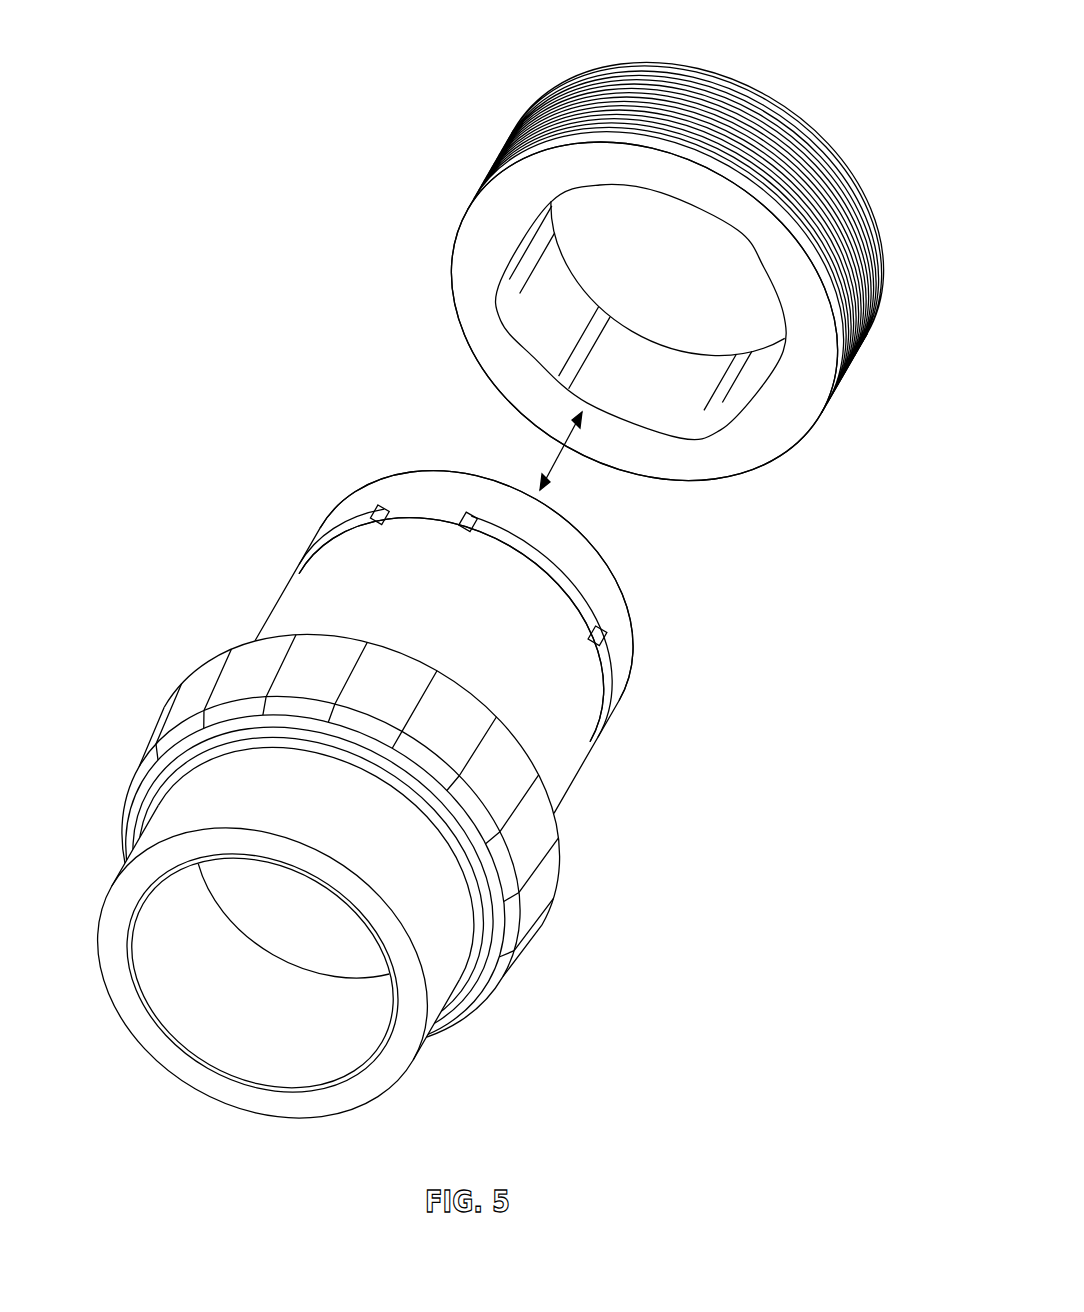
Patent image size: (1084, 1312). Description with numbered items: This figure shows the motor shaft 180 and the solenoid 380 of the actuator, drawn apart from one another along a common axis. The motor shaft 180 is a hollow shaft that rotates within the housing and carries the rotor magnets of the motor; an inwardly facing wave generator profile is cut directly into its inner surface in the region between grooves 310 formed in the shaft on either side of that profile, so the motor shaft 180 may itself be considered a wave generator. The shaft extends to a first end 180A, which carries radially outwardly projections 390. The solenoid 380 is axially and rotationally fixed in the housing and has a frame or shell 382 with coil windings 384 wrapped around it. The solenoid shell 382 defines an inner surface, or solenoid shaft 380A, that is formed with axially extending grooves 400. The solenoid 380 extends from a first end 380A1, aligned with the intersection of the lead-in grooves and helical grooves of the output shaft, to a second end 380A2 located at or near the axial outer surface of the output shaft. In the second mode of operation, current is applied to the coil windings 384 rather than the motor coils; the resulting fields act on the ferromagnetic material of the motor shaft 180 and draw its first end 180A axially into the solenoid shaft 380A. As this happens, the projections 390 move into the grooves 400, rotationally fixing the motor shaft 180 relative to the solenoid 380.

The motor shaft 180 is at (292, 580).
The first end of the motor shaft 180A is at (594, 541).
The grooves 310 is at (270, 953).
The solenoid 380 is at (450, 135).
The solenoid shaft 380A is at (570, 300).
The first end of the solenoid 380A1 is at (792, 410).
The second end of the solenoid 380A2 is at (706, 78).
The solenoid shell 382 is at (851, 163).
The coil windings 384 is at (880, 300).
The projections 390 is at (474, 512).
The grooves 400 is at (606, 372).